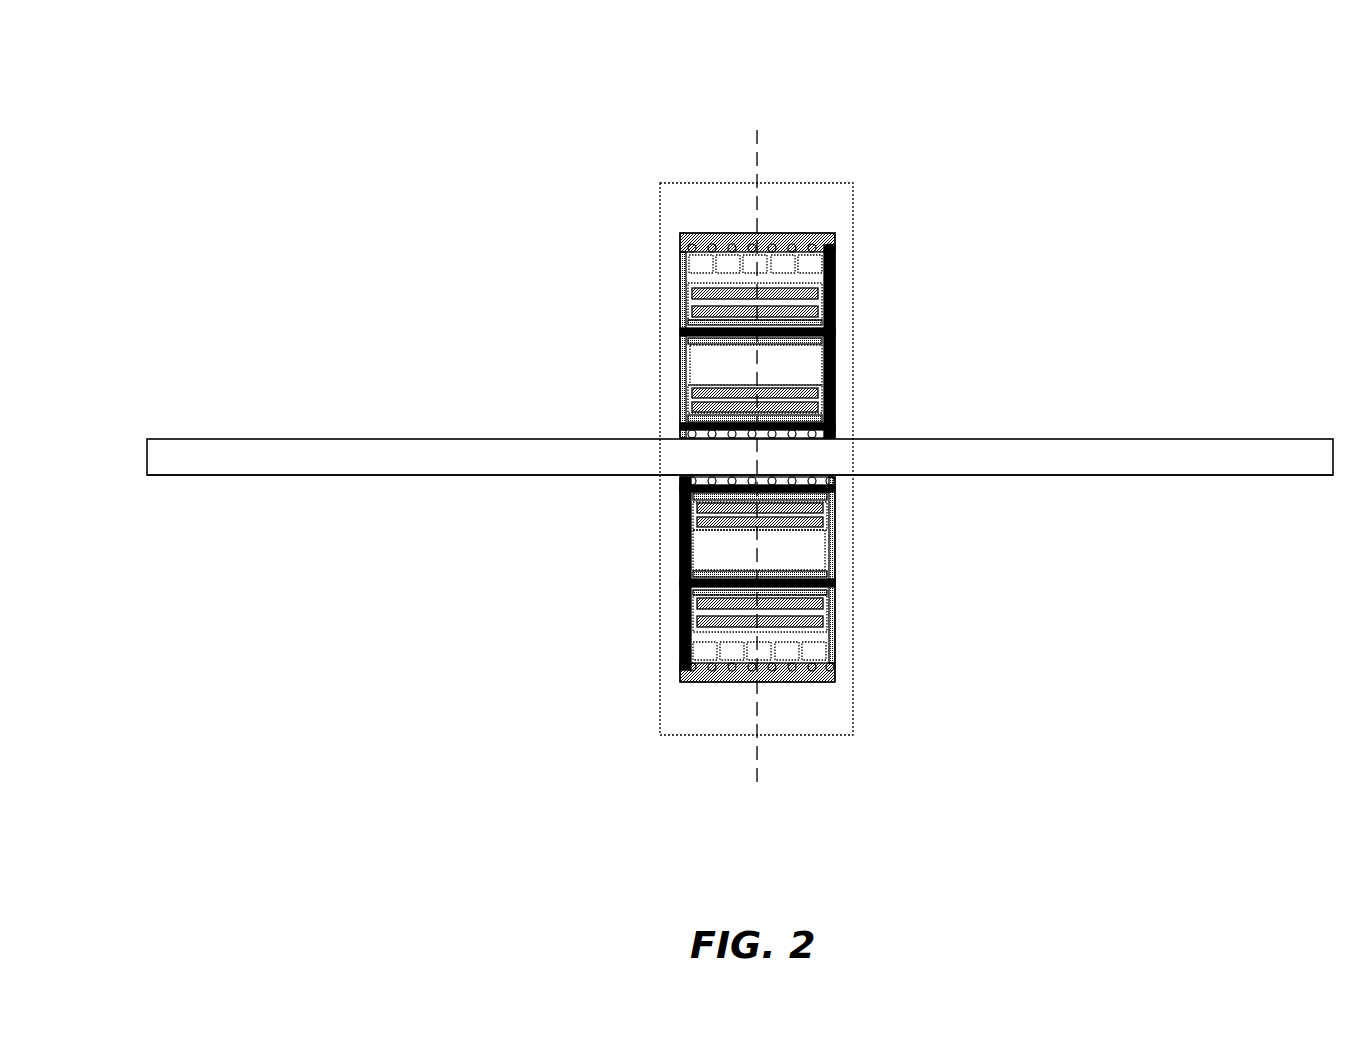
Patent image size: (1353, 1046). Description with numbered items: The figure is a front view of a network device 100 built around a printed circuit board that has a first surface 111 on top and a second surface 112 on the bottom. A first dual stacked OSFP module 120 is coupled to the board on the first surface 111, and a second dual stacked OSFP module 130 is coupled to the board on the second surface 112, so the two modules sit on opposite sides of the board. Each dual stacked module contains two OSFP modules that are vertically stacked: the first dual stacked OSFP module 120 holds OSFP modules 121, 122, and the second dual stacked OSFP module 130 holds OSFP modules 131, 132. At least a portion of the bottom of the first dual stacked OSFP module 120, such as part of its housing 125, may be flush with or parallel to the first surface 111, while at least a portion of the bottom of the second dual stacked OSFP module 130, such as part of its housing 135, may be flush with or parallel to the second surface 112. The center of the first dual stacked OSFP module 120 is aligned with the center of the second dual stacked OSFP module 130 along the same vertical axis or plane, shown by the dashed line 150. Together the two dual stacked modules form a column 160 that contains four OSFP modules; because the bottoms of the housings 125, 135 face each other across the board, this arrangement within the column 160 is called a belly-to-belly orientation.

The network device 100 is at (248, 115).
The first surface 111 is at (287, 437).
The second surface 112 is at (1194, 478).
The first dual stacked OSFP module 120 is at (706, 226).
The OSFP module 121 is at (678, 301).
The OSFP module 122 is at (678, 400).
The housing 125 is at (836, 332).
The second dual stacked OSFP module 130 is at (808, 696).
The OSFP module 131 is at (678, 510).
The OSFP module 132 is at (678, 612).
The housing 135 is at (836, 574).
The line 150 is at (757, 770).
The column 160 is at (660, 683).